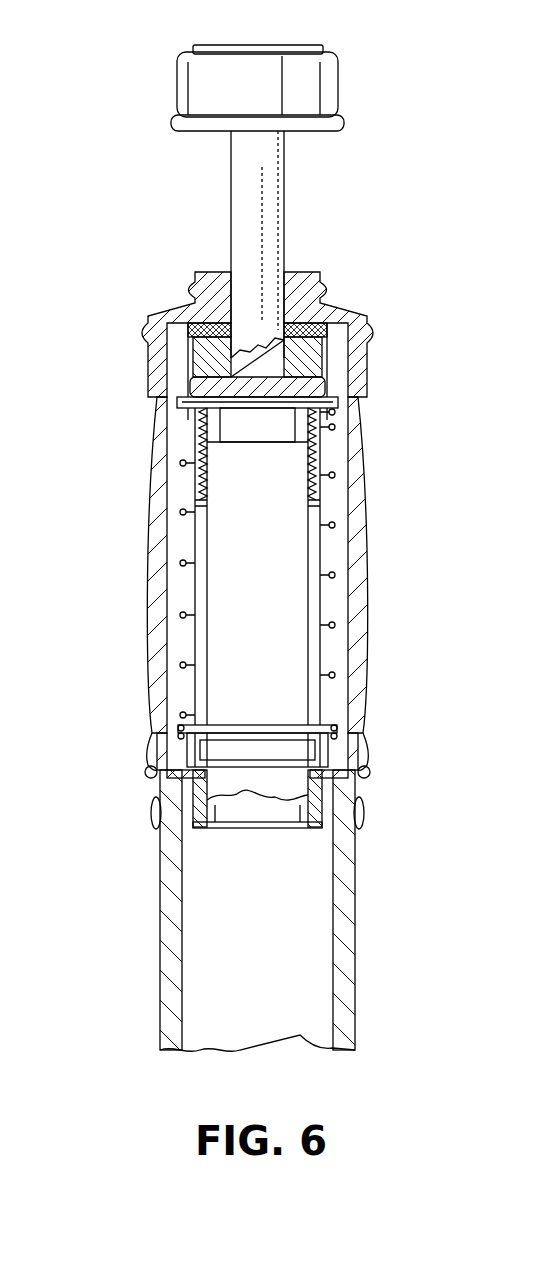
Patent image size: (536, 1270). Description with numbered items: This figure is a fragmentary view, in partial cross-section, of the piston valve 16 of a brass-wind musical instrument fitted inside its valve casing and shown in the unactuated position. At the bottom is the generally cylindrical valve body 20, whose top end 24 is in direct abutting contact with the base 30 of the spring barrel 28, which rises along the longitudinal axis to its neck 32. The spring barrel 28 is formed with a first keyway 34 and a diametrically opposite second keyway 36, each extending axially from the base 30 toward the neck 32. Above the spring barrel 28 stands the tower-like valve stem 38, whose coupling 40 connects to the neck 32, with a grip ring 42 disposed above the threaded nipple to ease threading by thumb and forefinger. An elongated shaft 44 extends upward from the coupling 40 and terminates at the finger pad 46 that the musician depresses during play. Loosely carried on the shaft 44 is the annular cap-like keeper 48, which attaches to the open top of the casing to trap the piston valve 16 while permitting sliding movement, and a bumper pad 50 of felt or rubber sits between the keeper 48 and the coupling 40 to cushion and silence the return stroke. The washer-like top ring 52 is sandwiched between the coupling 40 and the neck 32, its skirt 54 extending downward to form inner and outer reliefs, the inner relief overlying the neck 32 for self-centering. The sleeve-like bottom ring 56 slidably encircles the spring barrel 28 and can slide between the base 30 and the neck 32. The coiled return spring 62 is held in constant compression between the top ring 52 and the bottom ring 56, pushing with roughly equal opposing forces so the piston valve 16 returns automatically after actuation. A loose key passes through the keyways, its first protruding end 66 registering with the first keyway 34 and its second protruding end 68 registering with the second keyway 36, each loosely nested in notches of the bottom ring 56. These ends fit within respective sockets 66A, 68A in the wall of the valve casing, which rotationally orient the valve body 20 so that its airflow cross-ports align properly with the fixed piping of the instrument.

The piston valve 16 is at (120, 250).
The valve body 20 is at (270, 915).
The top end 24 is at (160, 830).
The spring barrel 28 is at (186, 483).
The base 30 is at (348, 820).
The neck 32 is at (190, 420).
The first keyway 34 is at (205, 545).
The second keyway 36 is at (312, 647).
The valve stem 38 is at (287, 218).
The coupling 40 is at (297, 442).
The grip ring 42 is at (335, 385).
The elongated shaft 44 is at (242, 188).
The finger pad 46 is at (330, 88).
The keeper 48 is at (155, 362).
The bumper pad 50 is at (325, 352).
The top ring 52 is at (343, 403).
The skirt 54 is at (262, 408).
The bottom ring 56 is at (245, 722).
The return spring 62 is at (343, 523).
The first protruding end 66 is at (150, 738).
The second protruding end 68 is at (335, 748).
The socket 66A is at (170, 760).
The socket 68A is at (343, 760).